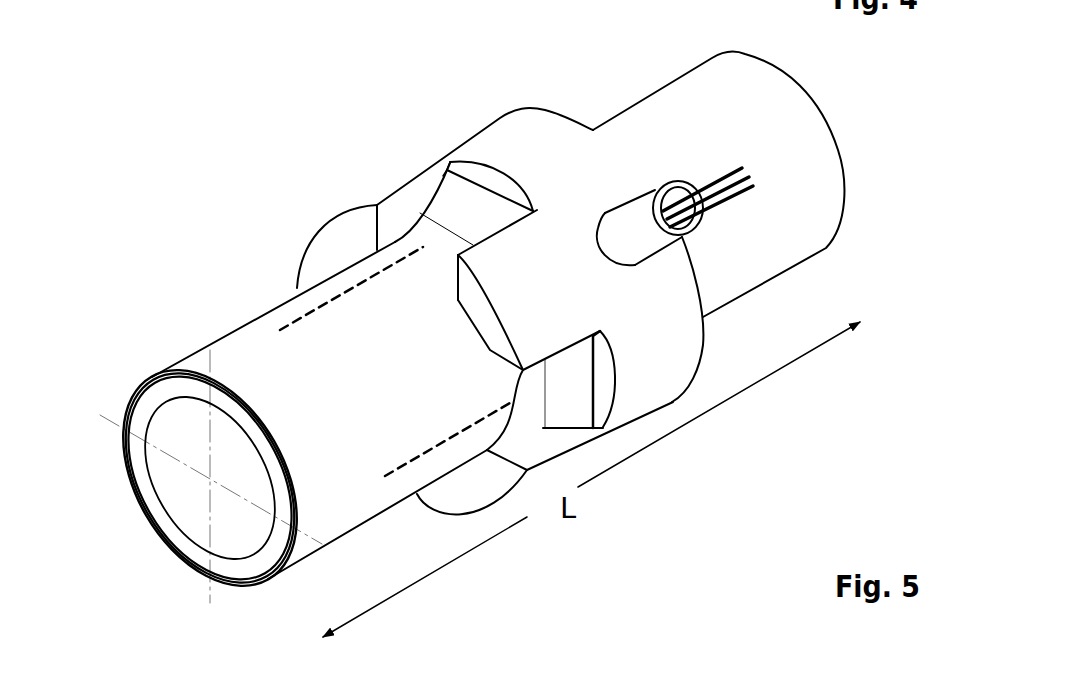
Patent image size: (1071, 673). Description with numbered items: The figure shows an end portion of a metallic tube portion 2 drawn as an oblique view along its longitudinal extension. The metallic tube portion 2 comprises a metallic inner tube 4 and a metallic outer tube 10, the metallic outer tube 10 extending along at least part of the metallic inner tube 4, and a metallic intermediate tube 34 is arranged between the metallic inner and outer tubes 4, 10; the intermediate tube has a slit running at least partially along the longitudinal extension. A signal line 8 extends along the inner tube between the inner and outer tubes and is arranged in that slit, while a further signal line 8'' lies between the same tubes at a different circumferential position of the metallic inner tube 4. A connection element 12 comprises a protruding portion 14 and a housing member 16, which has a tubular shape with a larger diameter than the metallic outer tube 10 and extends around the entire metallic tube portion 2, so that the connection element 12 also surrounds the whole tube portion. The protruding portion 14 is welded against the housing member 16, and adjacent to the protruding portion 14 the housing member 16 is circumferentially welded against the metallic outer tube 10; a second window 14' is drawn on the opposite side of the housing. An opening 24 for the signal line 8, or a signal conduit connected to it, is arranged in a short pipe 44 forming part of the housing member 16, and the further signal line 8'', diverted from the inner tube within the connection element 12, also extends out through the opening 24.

The metallic tube portion 2 is at (198, 165).
The metallic inner tube 4 is at (162, 505).
The signal line 8 is at (516, 285).
The further signal line 8'' is at (617, 317).
The metallic outer tube 10 is at (180, 360).
The connection element 12 is at (437, 92).
The protruding portion 14 is at (439, 147).
The second window opening 14' is at (551, 371).
The housing member 16 is at (675, 323).
The opening 24 is at (674, 193).
The metallic intermediate tube 34 is at (135, 397).
The short pipe 44 is at (643, 207).